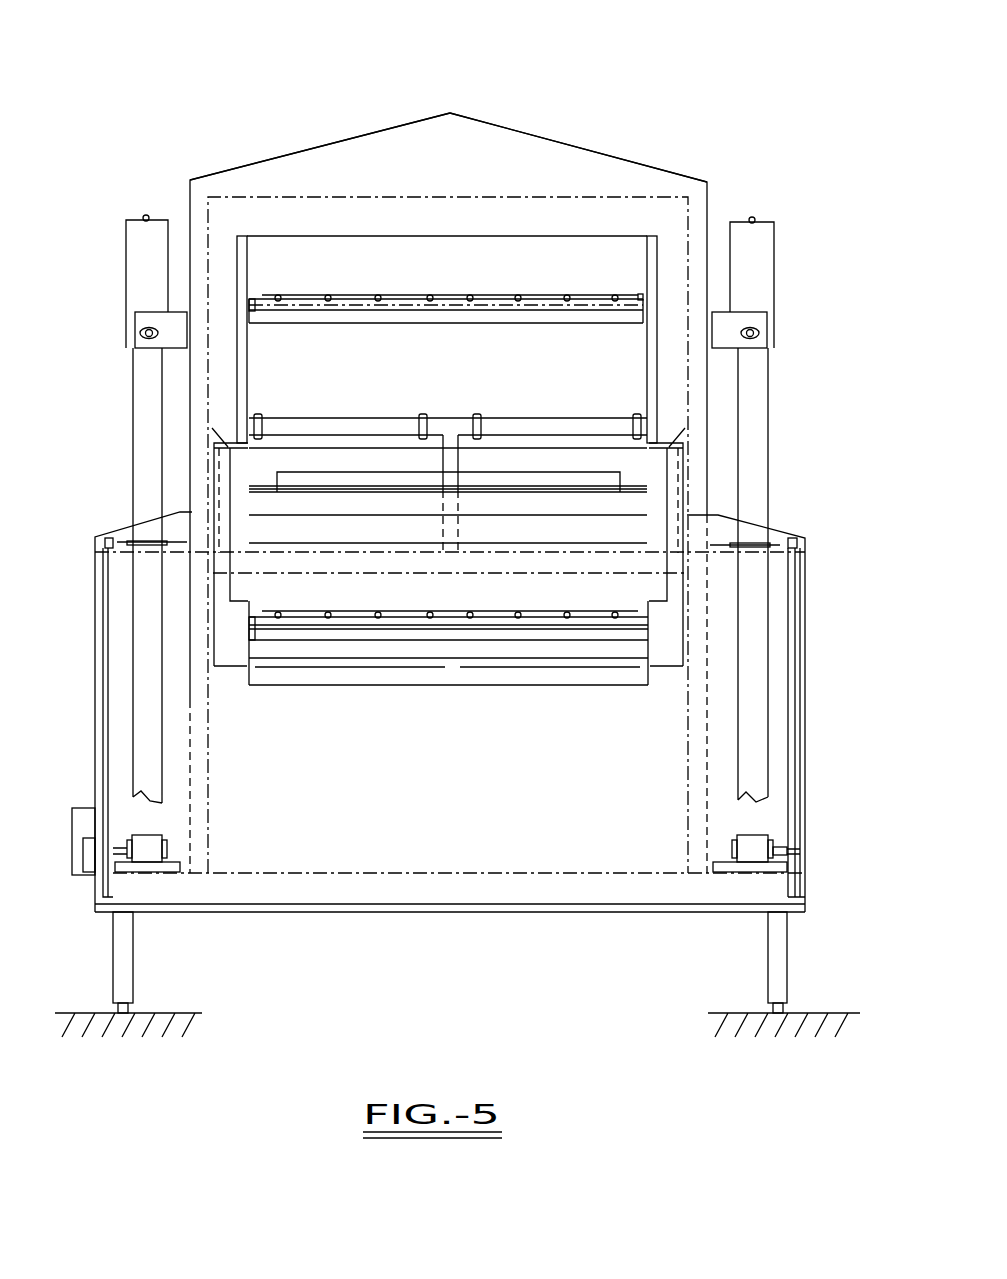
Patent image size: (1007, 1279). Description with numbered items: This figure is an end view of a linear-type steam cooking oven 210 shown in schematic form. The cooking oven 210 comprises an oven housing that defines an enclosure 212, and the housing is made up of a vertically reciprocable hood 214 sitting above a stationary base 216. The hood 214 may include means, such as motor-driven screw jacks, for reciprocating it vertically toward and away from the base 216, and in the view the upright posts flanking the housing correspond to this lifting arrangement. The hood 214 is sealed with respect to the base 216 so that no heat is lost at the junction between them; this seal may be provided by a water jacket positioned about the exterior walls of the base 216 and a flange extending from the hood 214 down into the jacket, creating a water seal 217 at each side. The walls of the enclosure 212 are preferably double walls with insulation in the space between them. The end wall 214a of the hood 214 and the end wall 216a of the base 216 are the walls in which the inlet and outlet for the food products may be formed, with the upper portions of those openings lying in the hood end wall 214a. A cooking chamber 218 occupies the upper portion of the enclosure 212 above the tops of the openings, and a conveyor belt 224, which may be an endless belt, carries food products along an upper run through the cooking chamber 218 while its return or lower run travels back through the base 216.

The cooking oven 210 is at (469, 520).
The enclosure 212 is at (282, 158).
The hood 214 is at (535, 133).
The end wall of hood 214a is at (640, 185).
The base 216 is at (806, 738).
The end wall of base 216a is at (484, 768).
The water seal 217 is at (222, 474).
The cooking chamber 218 is at (474, 381).
The conveyor belt 224 is at (450, 296).